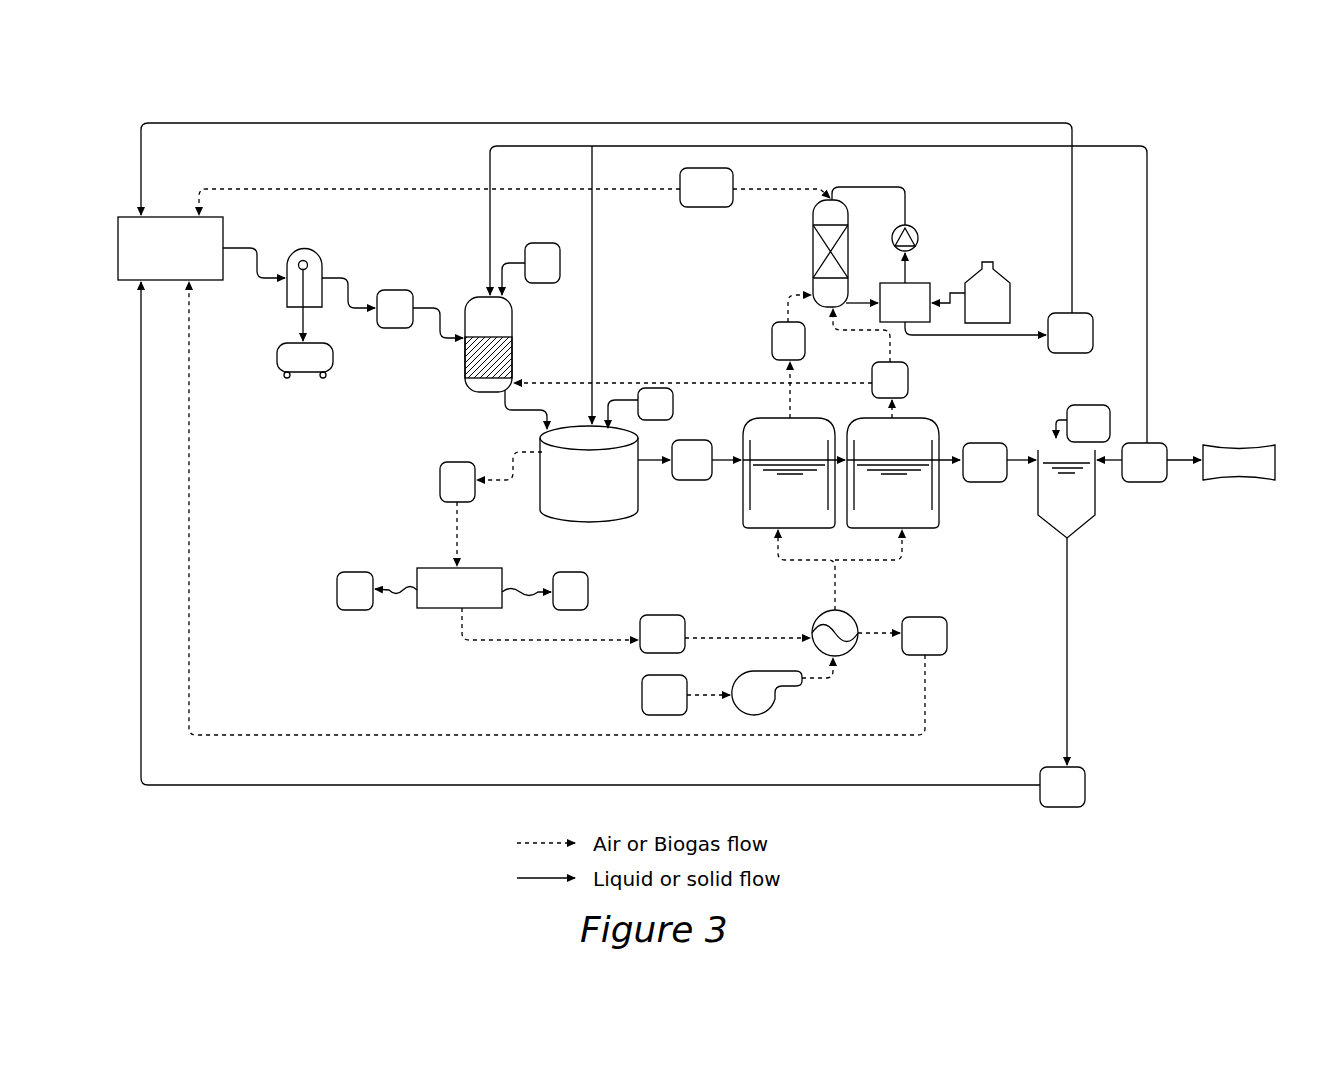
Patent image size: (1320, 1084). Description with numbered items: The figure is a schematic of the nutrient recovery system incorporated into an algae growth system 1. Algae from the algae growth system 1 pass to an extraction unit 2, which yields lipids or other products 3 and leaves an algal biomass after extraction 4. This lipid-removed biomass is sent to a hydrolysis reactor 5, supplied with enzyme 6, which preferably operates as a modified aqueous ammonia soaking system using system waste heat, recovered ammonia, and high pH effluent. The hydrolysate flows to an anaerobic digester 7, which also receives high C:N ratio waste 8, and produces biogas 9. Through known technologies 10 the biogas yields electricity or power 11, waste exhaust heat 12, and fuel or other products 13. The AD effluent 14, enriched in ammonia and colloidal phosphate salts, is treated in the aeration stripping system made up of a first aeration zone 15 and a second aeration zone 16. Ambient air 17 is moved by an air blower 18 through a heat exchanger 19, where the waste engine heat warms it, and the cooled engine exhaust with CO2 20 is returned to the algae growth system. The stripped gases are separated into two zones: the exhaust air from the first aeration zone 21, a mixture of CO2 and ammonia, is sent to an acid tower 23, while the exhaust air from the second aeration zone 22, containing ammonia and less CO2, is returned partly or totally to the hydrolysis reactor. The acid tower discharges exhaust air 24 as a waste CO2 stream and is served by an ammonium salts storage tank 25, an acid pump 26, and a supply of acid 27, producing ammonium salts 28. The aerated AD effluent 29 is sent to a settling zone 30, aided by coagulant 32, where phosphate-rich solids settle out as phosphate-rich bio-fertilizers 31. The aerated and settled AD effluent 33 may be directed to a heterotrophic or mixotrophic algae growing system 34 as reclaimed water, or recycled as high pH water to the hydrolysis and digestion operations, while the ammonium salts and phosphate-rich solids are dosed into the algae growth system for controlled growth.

The algae growth system 1 is at (170, 248).
The lipid or other products extraction unit 2 is at (304, 267).
The lipid or other products from algae 3 is at (305, 360).
The algal biomass after extraction 4 is at (395, 309).
The hydrolysis reactor 5 is at (488, 344).
The enzyme 6 is at (542, 263).
The anaerobic digester 7 is at (589, 474).
The high C:N ratio waste 8 is at (655, 404).
The biogas 9 is at (457, 482).
The known knowledge for producing power, heat and/or fuel from biogas 10 is at (459, 588).
The electricity/power 11 is at (355, 591).
The waste exhaust heat from engine/generator 12 is at (662, 634).
The fuel or other products from biogas 13 is at (570, 591).
The AD effluent 14 is at (692, 460).
The first aeration zone 15 is at (789, 473).
The second aeration zone 16 is at (893, 473).
The ambient air 17 is at (664, 695).
The air blower 18 is at (767, 693).
The heat exchanger 19 is at (822, 628).
The cooled engine exhaust with CO2 20 is at (924, 636).
The exhaust air from first aeration zone 21 is at (788, 341).
The exhaust air from second aeration zone 22 is at (890, 380).
The acid tower 23 is at (814, 253).
The exhaust air from acid tower 24 is at (706, 187).
The ammonium salts storage tank 25 is at (905, 302).
The acid pump 26 is at (921, 238).
The acid 27 is at (987, 292).
The ammonium salts 28 is at (1070, 333).
The aerated AD effluent 29 is at (985, 462).
The settling zone 30 is at (1066, 494).
The phosphate-rich bio-fertilizers 31 is at (1062, 787).
The coagulant 32 is at (1088, 423).
The aerated and settled AD effluent 33 is at (1144, 462).
The heterotrophic/mixotrophic algae growing system with treated AD effluent 34 is at (1239, 462).